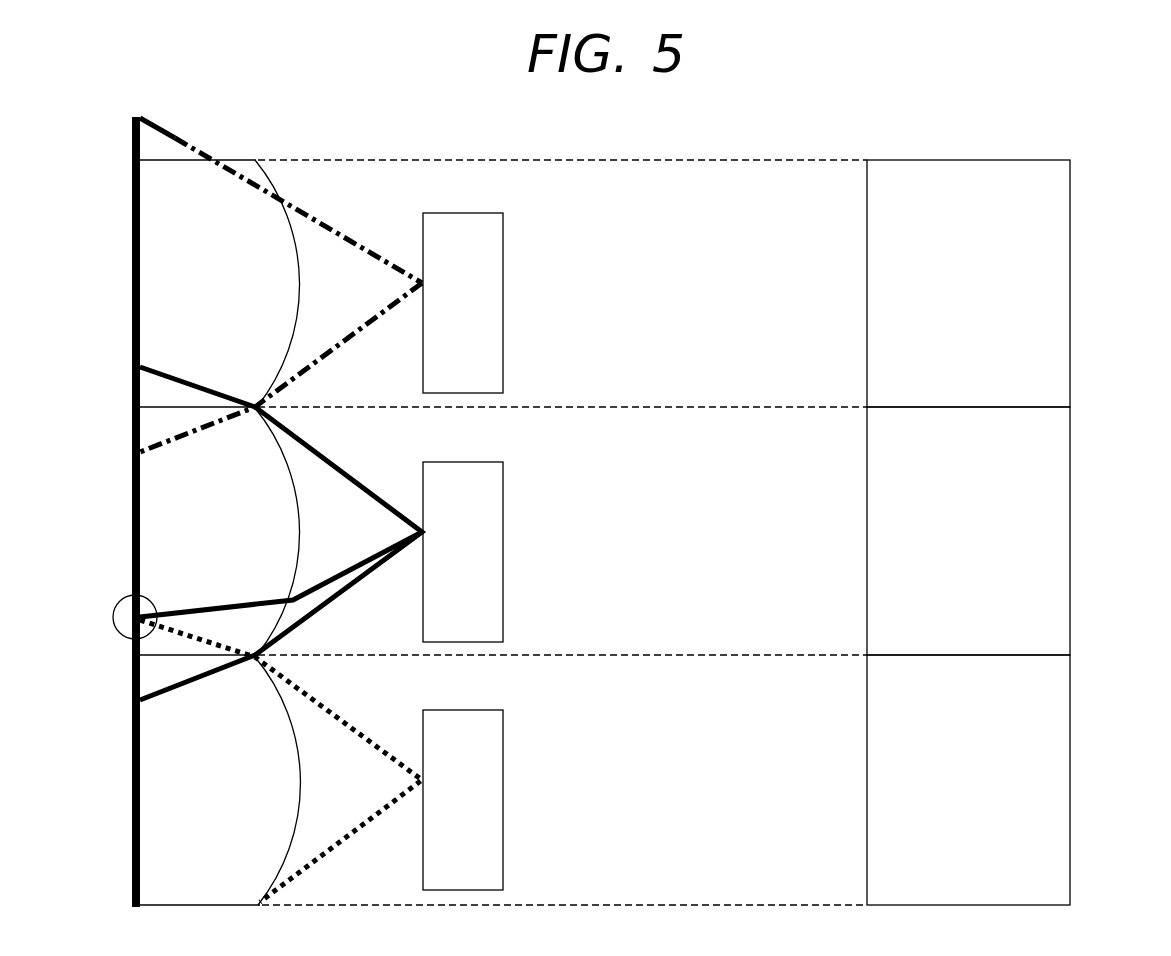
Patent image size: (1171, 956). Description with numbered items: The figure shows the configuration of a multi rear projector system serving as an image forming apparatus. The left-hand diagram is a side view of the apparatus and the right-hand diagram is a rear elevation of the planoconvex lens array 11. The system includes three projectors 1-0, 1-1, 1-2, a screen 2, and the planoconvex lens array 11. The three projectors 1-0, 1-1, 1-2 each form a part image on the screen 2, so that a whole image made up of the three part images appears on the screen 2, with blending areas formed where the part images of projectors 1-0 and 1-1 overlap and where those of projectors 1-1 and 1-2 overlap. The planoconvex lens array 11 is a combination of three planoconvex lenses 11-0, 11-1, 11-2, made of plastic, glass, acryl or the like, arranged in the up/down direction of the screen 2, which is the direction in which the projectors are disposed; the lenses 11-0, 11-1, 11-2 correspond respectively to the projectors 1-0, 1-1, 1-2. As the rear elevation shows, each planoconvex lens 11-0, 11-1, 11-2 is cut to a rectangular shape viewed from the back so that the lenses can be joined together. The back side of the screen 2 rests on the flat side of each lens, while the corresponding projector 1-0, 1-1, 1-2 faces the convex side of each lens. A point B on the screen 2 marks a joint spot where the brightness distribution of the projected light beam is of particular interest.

The screen 2 is at (136, 127).
The planoconvex lens array 11 is at (170, 535).
The planoconvex lens 11-0 is at (262, 223).
The planoconvex lens 11-1 is at (262, 473).
The planoconvex lens 11-2 is at (262, 725).
The projector 1-0 is at (504, 299).
The projector 1-1 is at (504, 549).
The projector 1-2 is at (504, 796).
The point B is at (113, 618).